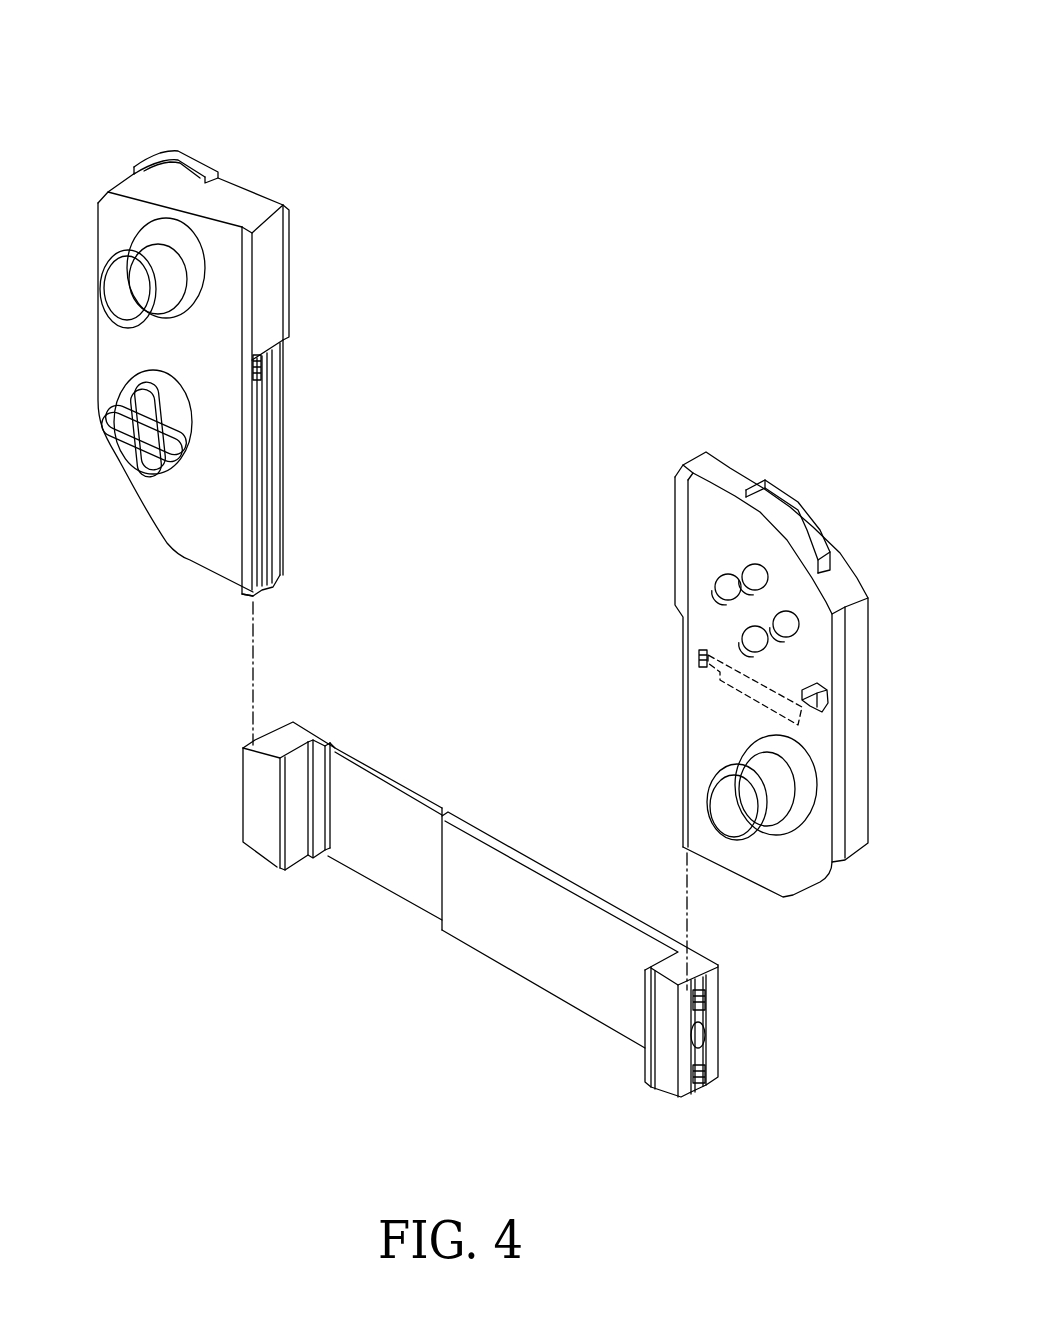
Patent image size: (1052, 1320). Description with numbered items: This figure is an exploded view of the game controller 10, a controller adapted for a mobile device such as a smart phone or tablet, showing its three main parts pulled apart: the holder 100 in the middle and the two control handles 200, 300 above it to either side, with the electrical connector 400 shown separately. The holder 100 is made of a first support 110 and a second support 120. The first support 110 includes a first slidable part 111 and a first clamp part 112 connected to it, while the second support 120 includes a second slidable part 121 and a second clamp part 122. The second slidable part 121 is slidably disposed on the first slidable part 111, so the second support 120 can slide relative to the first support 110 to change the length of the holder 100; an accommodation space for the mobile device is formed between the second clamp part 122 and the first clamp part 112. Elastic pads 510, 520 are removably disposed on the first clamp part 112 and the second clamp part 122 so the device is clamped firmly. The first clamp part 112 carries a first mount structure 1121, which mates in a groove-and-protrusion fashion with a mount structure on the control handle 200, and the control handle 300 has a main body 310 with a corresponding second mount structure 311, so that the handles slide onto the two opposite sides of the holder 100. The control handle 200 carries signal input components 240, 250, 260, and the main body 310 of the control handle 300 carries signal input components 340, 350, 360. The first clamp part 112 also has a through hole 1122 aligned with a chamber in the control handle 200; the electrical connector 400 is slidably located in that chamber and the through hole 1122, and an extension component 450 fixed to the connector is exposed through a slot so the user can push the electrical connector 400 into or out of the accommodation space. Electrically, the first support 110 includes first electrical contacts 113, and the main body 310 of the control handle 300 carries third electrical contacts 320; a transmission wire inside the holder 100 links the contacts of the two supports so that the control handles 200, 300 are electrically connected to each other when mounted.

The game controller 10 is at (467, 592).
The holder 100 is at (528, 881).
The first support 110 is at (637, 934).
The first slidable part 111 is at (547, 943).
The first clamp part 112 is at (727, 1070).
The first electrical contacts 113 is at (705, 1003).
The first mount structure 1121 is at (703, 1087).
The through hole 1122 is at (714, 1047).
The second support 120 is at (332, 781).
The second slidable part 121 is at (390, 863).
The second clamp part 122 is at (260, 840).
The control handle 200 is at (768, 637).
The signal input component 240 is at (783, 645).
The signal input component 250 is at (770, 858).
The signal input component 260 is at (805, 512).
The control handle 300 is at (194, 376).
The main body 310 is at (107, 237).
The second mount structure 311 is at (253, 598).
The third electrical contacts 320 is at (264, 357).
The signal input component 340 is at (117, 288).
The signal input component 350 is at (107, 414).
The signal input component 360 is at (180, 150).
The electrical connector 400 is at (705, 660).
The extension component 450 is at (828, 698).
The elastic pad 510 is at (653, 1082).
The elastic pad 520 is at (275, 880).